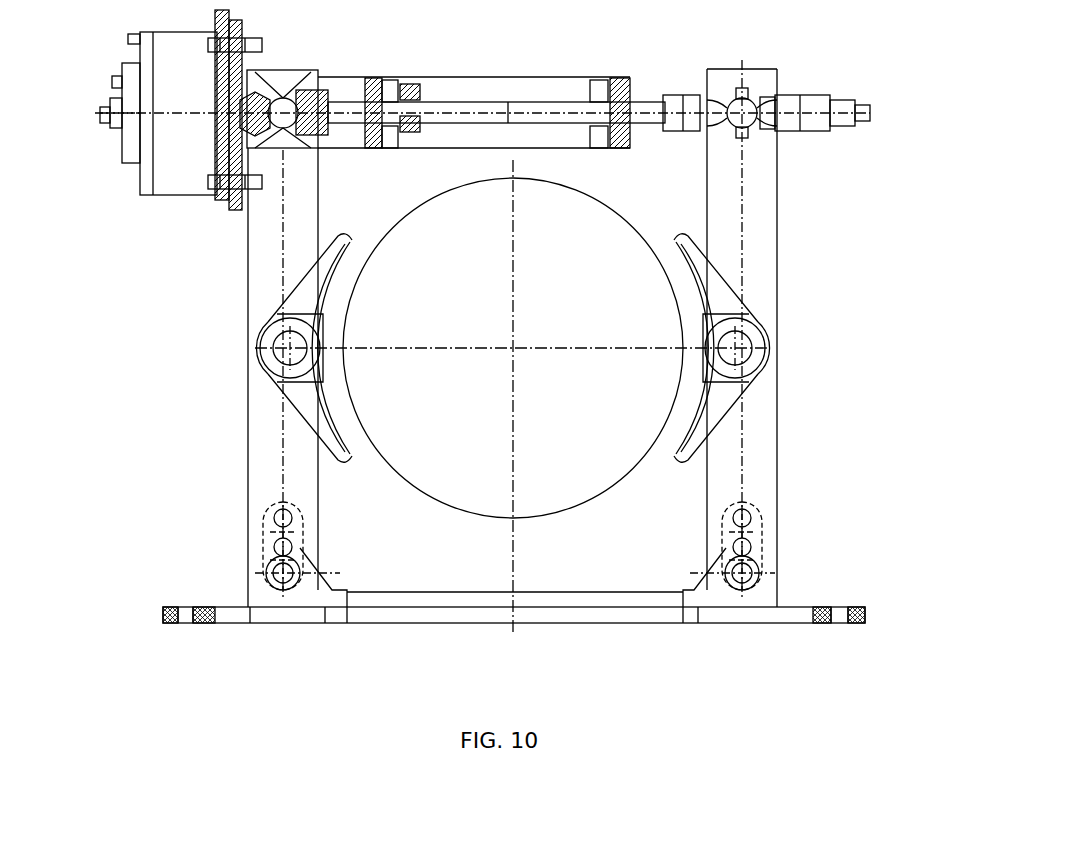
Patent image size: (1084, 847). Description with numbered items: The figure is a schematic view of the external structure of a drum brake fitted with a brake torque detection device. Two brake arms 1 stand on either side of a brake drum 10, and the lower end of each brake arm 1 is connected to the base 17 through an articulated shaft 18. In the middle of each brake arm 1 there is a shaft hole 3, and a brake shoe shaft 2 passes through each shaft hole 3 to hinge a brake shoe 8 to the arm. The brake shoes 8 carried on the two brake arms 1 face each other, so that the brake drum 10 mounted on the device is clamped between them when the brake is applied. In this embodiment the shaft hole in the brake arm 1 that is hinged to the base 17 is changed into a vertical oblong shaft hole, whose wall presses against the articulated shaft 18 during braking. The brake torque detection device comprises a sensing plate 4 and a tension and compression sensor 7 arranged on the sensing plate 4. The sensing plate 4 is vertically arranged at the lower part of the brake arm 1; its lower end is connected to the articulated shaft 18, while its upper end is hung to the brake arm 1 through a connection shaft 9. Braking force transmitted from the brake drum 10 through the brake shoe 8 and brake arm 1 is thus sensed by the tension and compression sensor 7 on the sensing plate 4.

The brake arm 1 is at (753, 430).
The brake shoe shaft 2 is at (753, 338).
The shaft hole 3 is at (260, 562).
The sensing plate 4 is at (757, 520).
The tension and compression sensor 7 is at (762, 532).
The brake shoe 8 is at (703, 283).
The connection shaft 9 is at (267, 513).
The brake drum 10 is at (585, 467).
The base 17 is at (762, 610).
The articulated shaft 18 is at (760, 568).